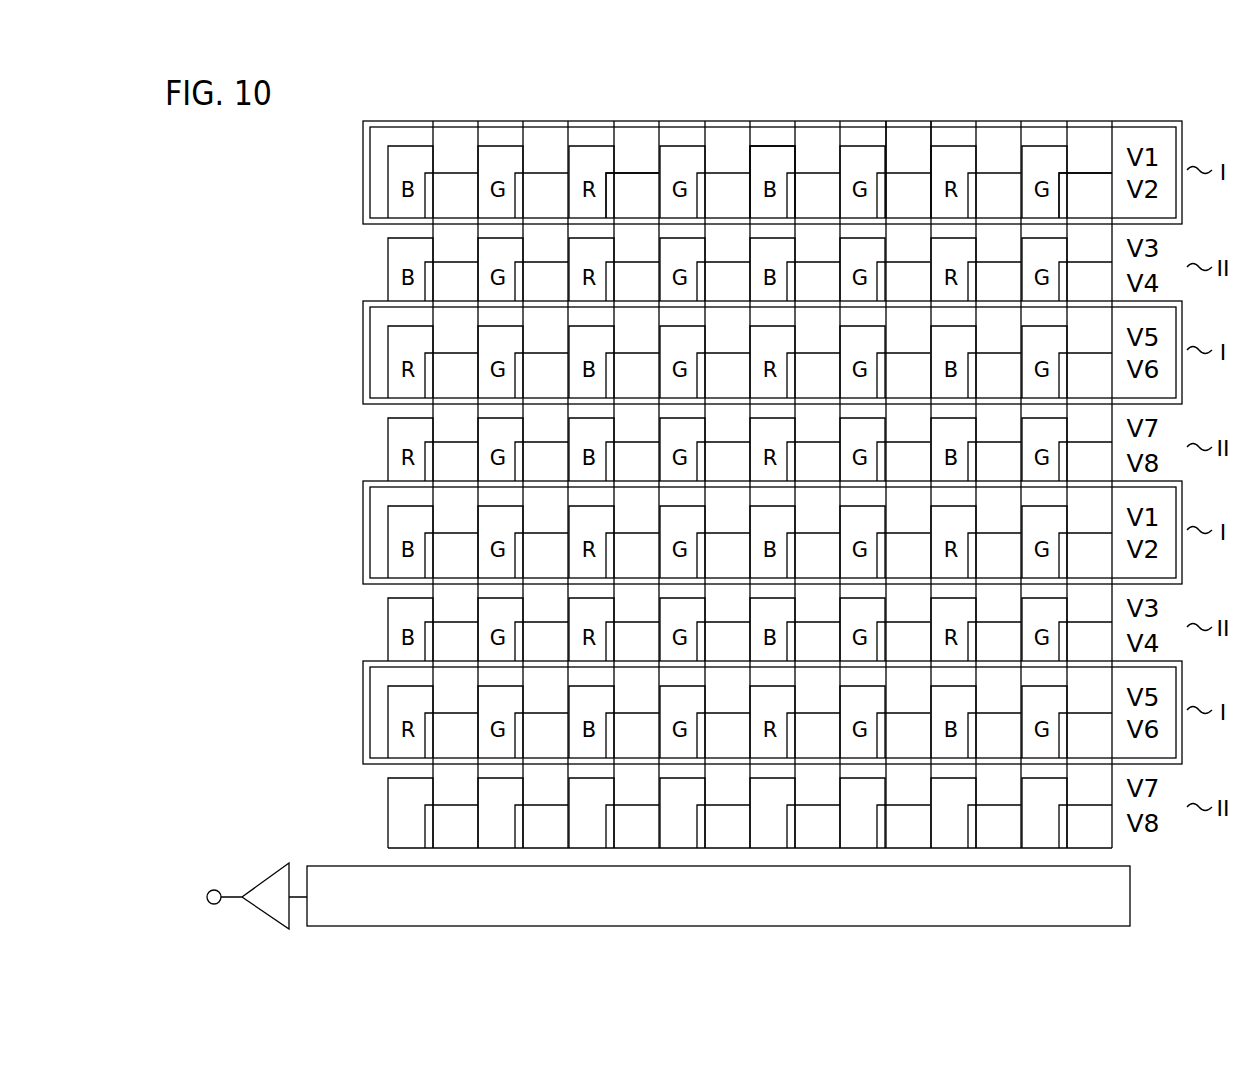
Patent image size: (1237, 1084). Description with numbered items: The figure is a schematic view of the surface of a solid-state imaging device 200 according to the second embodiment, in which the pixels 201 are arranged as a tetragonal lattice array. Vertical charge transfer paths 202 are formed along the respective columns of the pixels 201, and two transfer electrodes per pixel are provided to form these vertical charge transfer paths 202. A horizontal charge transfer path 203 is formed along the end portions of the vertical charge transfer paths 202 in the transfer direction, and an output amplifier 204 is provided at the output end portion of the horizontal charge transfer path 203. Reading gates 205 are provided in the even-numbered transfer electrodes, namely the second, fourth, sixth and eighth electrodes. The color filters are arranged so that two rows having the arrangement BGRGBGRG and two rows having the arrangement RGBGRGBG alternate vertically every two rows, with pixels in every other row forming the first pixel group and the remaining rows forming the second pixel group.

The solid-state imaging device 200 is at (310, 235).
The pixels 201 is at (770, 163).
The vertical charge transfer paths 202 is at (909, 146).
The horizontal charge transfer path 203 is at (1133, 899).
The output amplifier 204 is at (263, 880).
The reading gates 205 is at (612, 192).